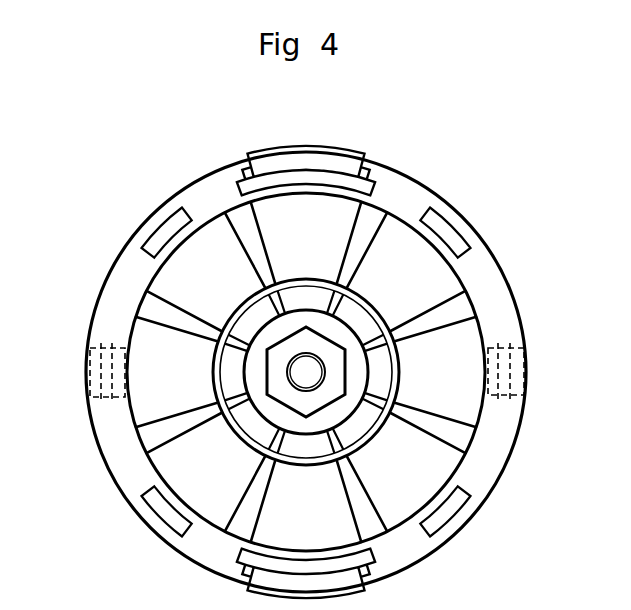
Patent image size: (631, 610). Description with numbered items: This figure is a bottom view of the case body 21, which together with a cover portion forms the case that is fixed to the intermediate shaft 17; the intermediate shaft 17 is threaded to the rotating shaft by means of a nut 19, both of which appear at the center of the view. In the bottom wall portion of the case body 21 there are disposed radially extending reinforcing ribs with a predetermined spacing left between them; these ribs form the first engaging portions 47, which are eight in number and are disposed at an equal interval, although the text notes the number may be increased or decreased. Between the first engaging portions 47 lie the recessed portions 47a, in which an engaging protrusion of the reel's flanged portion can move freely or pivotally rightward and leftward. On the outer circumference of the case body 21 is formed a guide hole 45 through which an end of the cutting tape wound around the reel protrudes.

The intermediate shaft 17 is at (316, 373).
The nut 19 is at (318, 397).
The case body 21 is at (493, 290).
The guide hole 45 is at (98, 350).
The first engaging portions 47 is at (357, 253).
The recessed portions 47a is at (215, 248).